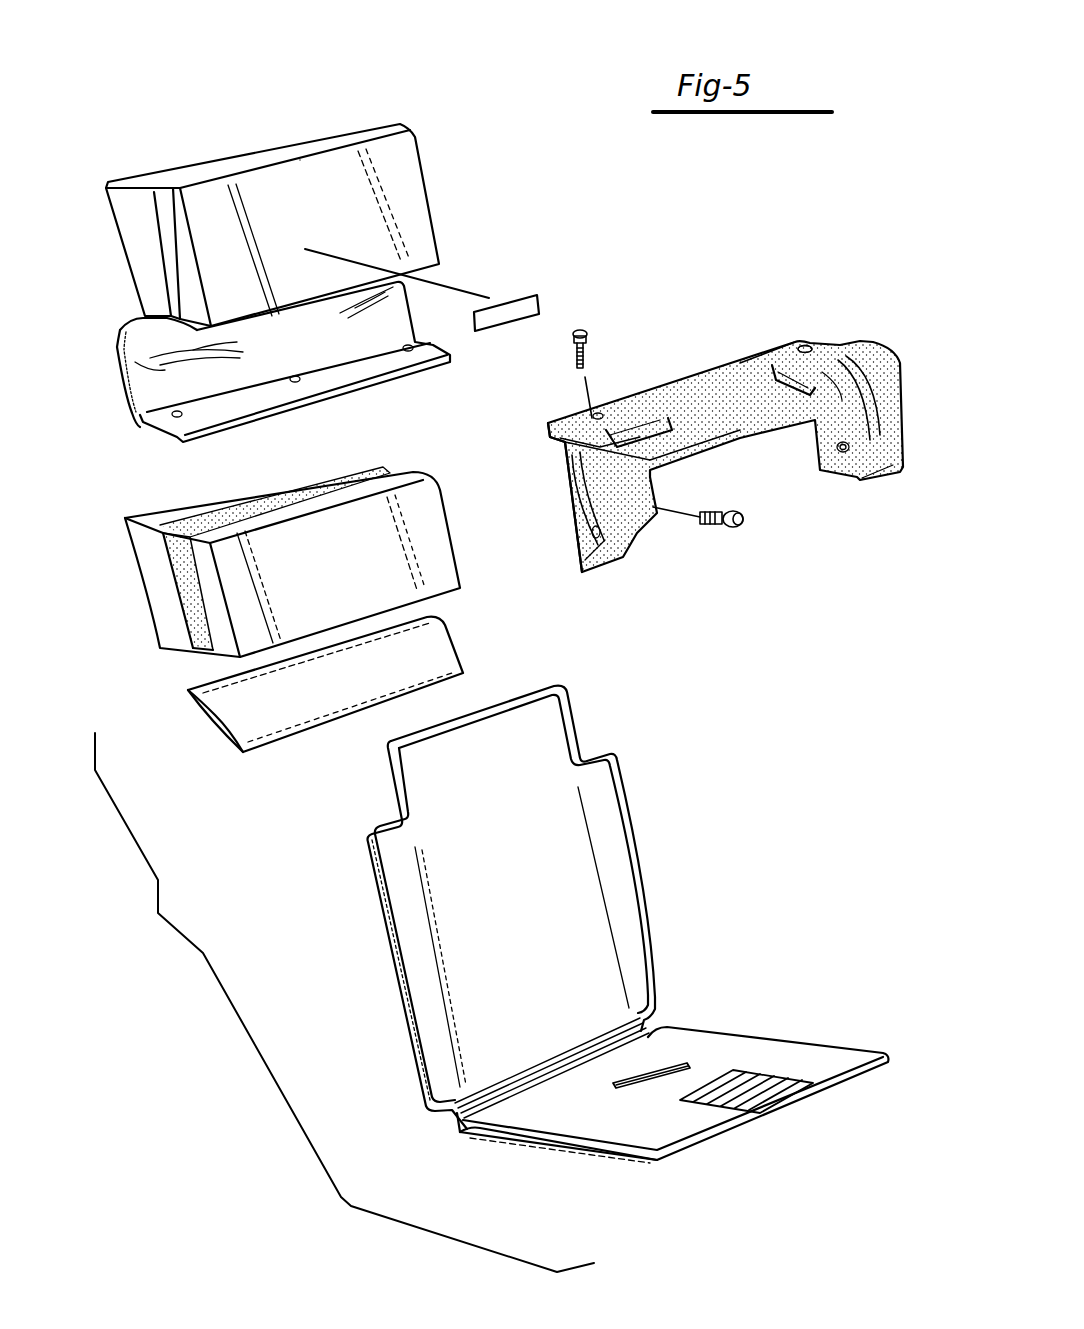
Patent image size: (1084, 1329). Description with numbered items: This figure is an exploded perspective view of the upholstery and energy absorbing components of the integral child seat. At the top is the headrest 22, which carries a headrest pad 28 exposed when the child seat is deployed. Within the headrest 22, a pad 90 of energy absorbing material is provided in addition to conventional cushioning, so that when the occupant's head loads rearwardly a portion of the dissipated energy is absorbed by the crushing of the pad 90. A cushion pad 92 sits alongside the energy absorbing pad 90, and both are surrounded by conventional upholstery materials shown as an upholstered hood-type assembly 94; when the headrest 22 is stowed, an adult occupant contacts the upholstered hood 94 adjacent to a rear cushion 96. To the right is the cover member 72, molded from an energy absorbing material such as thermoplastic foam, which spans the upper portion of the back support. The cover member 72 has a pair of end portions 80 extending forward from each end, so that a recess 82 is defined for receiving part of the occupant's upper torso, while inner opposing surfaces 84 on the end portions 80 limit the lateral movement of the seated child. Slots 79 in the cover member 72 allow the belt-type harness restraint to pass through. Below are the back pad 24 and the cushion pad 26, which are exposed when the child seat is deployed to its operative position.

The headrest 22 is at (132, 178).
The back pad 24 is at (614, 862).
The cushion pad 26 is at (760, 1047).
The headrest pad 28 is at (407, 188).
The cover member 72 is at (680, 364).
The slots 79 is at (643, 397).
The end portions 80 is at (577, 530).
The recess 82 is at (813, 353).
The inner opposing surfaces 84 is at (620, 477).
The energy absorbing pad 90 is at (173, 573).
The cushion pad 92 is at (346, 582).
The upholstered hood-type assembly 94 is at (338, 123).
The rear cushion 96 is at (345, 468).